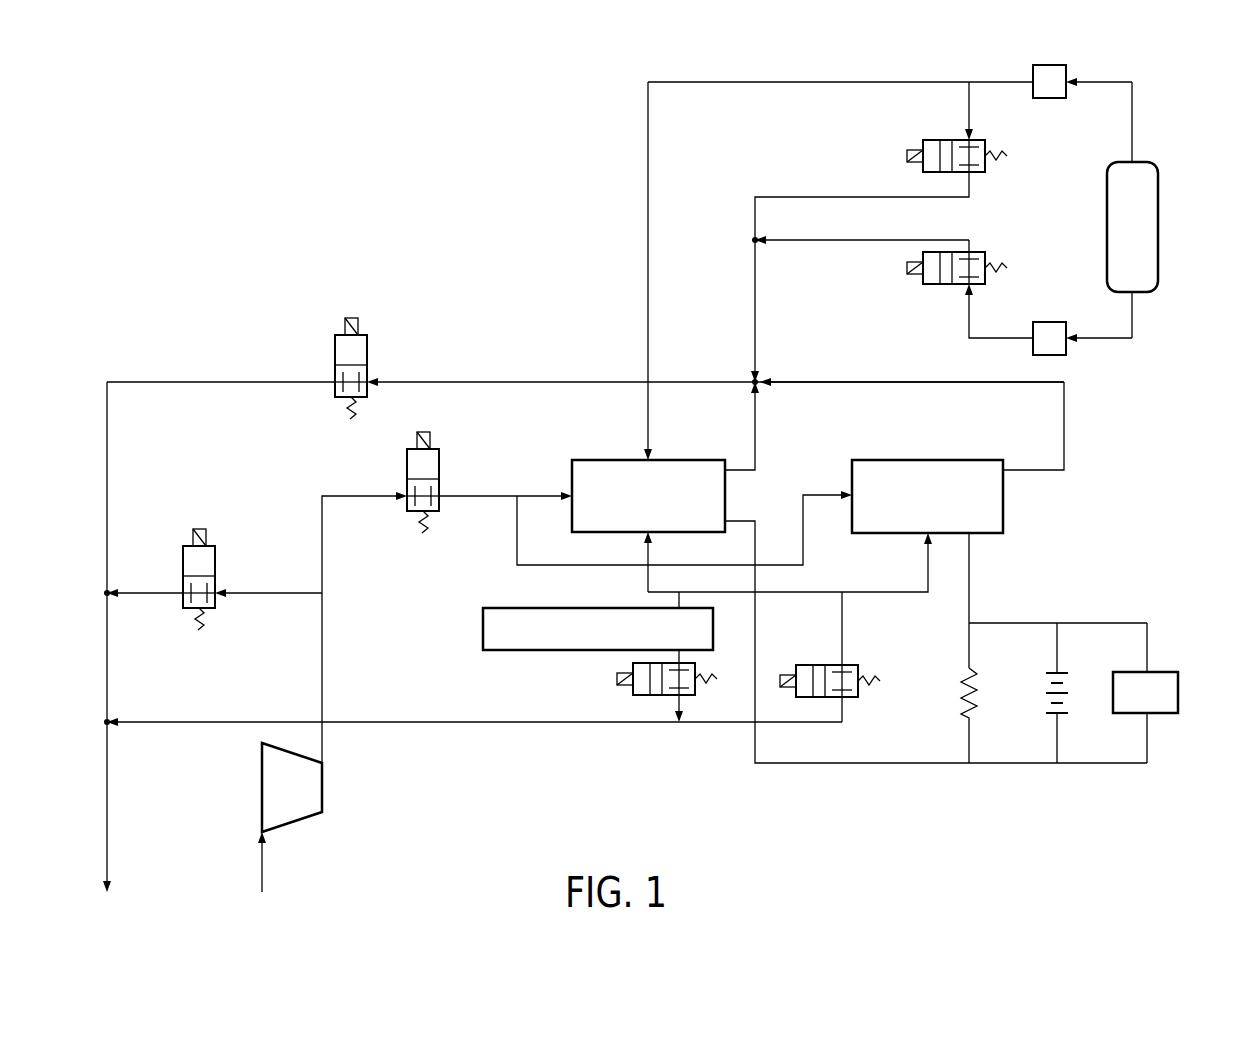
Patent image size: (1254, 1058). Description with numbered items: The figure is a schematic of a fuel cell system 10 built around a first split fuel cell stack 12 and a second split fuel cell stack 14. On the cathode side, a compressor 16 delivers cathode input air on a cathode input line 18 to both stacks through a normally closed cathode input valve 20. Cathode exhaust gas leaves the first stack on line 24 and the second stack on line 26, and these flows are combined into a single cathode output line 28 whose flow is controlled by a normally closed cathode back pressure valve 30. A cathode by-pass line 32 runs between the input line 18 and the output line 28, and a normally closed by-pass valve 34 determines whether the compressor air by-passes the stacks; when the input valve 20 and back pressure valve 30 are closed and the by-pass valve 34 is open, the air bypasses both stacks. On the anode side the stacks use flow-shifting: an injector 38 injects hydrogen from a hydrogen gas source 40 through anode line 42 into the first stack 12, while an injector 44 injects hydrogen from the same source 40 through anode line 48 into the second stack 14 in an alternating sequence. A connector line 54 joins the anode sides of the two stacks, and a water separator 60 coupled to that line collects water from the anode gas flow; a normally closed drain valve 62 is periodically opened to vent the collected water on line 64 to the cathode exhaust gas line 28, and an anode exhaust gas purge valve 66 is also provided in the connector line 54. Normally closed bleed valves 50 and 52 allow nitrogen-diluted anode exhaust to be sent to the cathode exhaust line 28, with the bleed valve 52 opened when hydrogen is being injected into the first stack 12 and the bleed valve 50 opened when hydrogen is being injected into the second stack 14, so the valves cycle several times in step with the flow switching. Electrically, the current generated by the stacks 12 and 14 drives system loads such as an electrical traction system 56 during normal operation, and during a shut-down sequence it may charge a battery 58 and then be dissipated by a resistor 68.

The fuel cell system 10 is at (300, 206).
The first split fuel cell stack 12 is at (600, 458).
The second split fuel cell stack 14 is at (1005, 510).
The compressor 16 is at (260, 788).
The cathode input line 18 is at (322, 650).
The cathode input valve 20 is at (405, 470).
The line 24 is at (755, 442).
The line 26 is at (1066, 430).
The cathode output line 28 is at (520, 380).
The cathode back pressure valve 30 is at (333, 352).
The cathode by-pass line 32 is at (288, 592).
The by-pass valve 34 is at (181, 566).
The injector 38 is at (1050, 98).
The hydrogen gas source 40 is at (1158, 228).
The anode line 42 is at (650, 160).
The injector 44 is at (1050, 322).
The anode line 48 is at (956, 365).
The bleed valve 50 is at (940, 140).
The bleed valve 52 is at (945, 284).
The connector line 54 is at (830, 590).
The electrical traction system 56 is at (1180, 695).
The battery 58 is at (1060, 715).
The water separator 60 is at (481, 626).
The drain valve 62 is at (615, 680).
The line 64 is at (437, 720).
The anode exhaust gas purge valve 66 is at (858, 668).
The resistor 68 is at (958, 700).